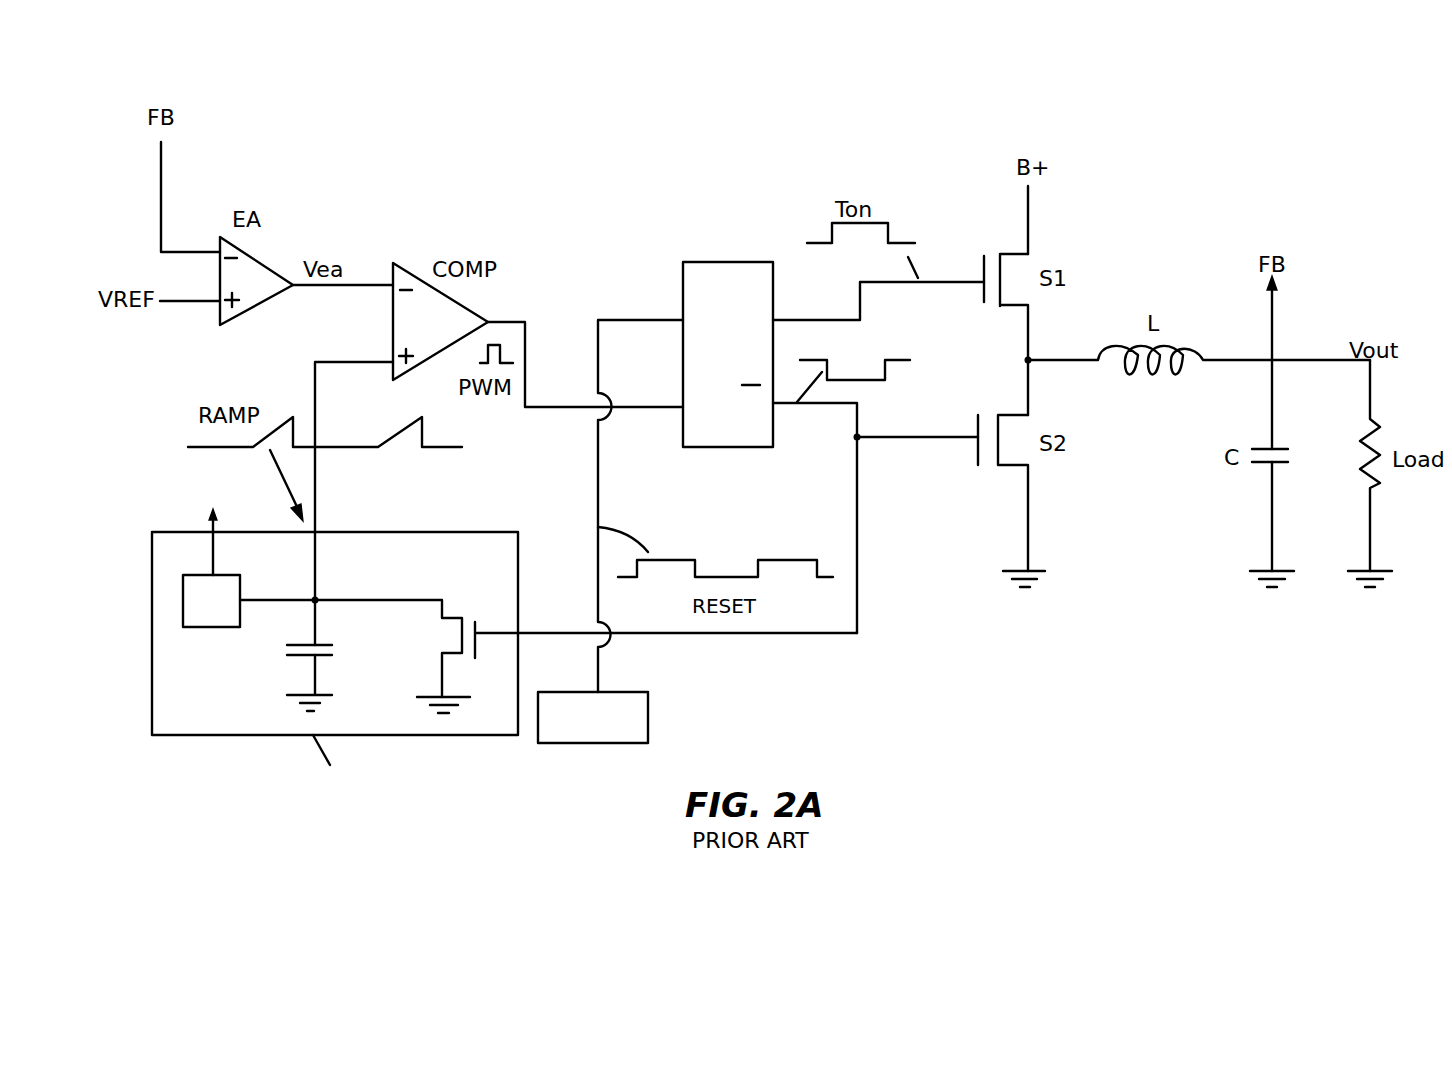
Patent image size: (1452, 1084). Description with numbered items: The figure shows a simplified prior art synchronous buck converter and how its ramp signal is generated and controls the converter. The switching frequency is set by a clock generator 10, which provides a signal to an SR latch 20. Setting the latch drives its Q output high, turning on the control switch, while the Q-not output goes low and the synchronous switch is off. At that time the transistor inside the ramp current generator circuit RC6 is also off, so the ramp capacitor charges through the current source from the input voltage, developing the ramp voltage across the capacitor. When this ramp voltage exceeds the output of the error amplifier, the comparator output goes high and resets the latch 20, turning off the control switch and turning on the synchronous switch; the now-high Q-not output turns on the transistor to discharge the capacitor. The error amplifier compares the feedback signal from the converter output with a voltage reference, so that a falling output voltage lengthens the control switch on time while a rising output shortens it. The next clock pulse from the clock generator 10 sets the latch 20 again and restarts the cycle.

The clock generator 10 is at (648, 718).
The SR latch 20 is at (725, 258).
The ramp current generator circuit RC6 is at (440, 528).